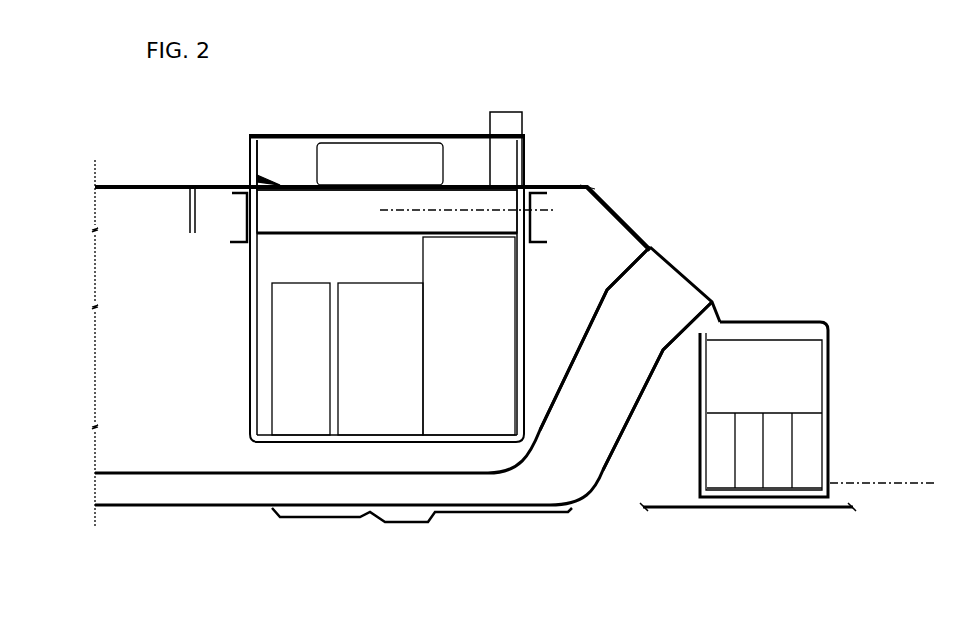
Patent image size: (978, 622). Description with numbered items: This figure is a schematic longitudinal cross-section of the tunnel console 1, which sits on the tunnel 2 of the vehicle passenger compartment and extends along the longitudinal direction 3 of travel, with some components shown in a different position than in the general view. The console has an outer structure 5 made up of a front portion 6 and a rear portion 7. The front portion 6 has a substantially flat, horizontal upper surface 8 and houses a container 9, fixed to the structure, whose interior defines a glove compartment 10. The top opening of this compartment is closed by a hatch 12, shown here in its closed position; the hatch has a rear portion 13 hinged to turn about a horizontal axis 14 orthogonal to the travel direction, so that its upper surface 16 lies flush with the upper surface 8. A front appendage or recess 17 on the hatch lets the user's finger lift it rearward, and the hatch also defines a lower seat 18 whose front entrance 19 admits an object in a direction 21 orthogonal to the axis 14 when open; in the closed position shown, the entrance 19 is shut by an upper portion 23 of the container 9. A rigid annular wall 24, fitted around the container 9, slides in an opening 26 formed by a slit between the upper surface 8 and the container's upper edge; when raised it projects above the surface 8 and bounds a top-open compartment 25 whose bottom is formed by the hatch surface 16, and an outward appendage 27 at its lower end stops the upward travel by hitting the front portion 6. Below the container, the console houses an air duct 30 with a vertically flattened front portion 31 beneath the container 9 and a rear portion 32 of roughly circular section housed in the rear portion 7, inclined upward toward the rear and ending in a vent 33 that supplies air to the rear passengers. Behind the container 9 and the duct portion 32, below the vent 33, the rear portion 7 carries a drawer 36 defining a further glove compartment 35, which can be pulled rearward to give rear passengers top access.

The tunnel console 1 is at (710, 148).
The tunnel 2 is at (392, 522).
The longitudinal direction 3 is at (887, 483).
The outer structure 5 is at (128, 184).
The front portion 6 is at (120, 217).
The rear portion 7 is at (612, 226).
The upper surface 8 is at (568, 184).
The container 9 is at (252, 330).
The glove compartment 10 is at (267, 354).
The hatch 12 is at (462, 183).
The rear portion of hatch 13 is at (531, 173).
The axis 14 is at (540, 176).
The upper surface of hatch 16 is at (448, 180).
The front appendage or recess 17 is at (258, 176).
The lower seat 18 is at (322, 191).
The front entrance 19 is at (340, 228).
The insertion direction 21 is at (600, 185).
The upper portion of container 23 is at (245, 229).
The wall 24 is at (533, 178).
The compartment 25 is at (258, 153).
The opening 26 is at (538, 177).
The appendage 27 is at (228, 195).
The air duct 30 is at (580, 507).
The front portion of air duct 31 is at (440, 515).
The rear portion of air duct 32 is at (651, 388).
The vent 33 is at (686, 268).
The glove compartment 35 is at (752, 378).
The drawer 36 is at (830, 378).